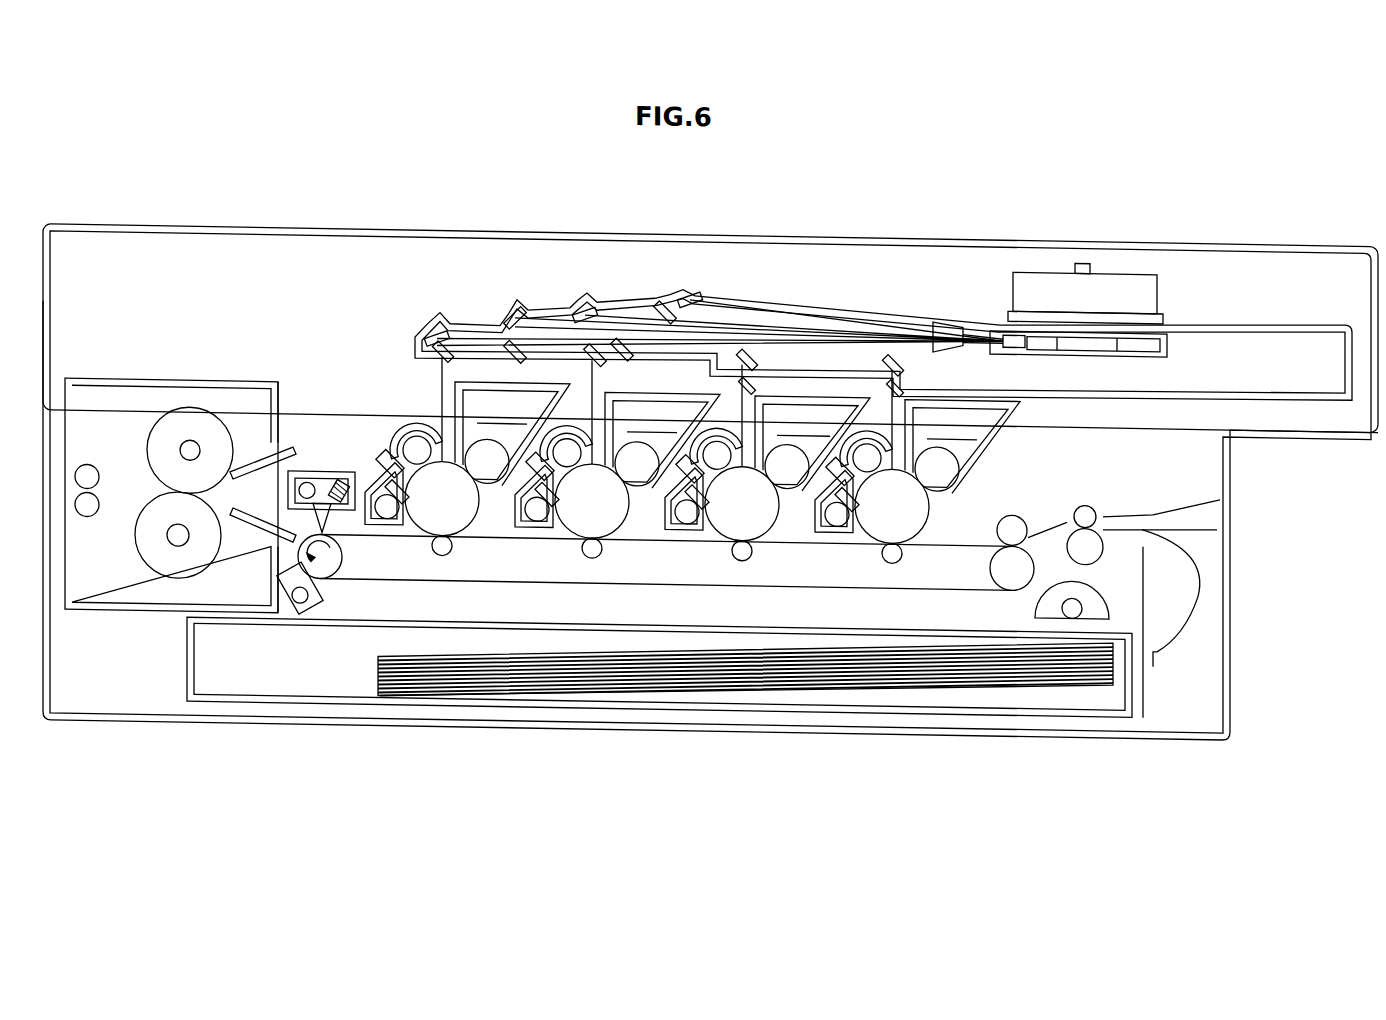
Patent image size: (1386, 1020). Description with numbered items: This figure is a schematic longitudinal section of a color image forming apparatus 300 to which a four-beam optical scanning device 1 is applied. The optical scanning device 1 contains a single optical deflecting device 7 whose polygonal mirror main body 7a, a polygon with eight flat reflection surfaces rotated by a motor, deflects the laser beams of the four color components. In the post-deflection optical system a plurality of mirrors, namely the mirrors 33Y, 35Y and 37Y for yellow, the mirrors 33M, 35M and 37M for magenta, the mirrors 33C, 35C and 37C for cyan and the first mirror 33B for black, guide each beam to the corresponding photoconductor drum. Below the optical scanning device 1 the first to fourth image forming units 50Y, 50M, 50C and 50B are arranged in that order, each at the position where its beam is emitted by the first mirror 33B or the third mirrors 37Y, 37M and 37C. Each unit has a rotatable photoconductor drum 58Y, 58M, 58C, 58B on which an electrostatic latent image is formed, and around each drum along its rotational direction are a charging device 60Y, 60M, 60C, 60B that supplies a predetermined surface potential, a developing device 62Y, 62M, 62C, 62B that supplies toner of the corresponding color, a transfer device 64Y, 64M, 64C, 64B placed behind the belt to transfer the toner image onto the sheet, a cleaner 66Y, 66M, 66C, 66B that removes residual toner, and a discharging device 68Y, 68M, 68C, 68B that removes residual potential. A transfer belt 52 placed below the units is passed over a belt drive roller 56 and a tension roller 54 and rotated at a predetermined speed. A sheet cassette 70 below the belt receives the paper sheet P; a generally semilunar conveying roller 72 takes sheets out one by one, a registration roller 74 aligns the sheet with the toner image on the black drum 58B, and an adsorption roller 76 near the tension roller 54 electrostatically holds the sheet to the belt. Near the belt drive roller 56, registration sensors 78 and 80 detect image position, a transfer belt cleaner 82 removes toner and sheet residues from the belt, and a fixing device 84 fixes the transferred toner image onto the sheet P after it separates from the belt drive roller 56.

The image forming apparatus 300 is at (1146, 223).
The optical scanning device 1 is at (1027, 385).
The optical deflecting device 7 is at (1160, 280).
The polygonal mirror main body 7a is at (1170, 330).
The first mirror 33B is at (425, 323).
The mirror 33C is at (508, 299).
The reflection mirror 33M is at (580, 293).
The mirror 33Y is at (695, 284).
The mirror 35C is at (500, 329).
The reflection mirror 35M is at (640, 334).
The mirror 35Y is at (665, 289).
The third mirror 37C is at (600, 335).
The third mirror 37M is at (758, 342).
The third mirror 37Y is at (905, 352).
The fourth image forming unit 50B is at (512, 434).
The third image forming unit 50C is at (662, 440).
The second image forming unit 50M is at (812, 444).
The first image forming unit 50Y is at (962, 447).
The transfer belt 52 is at (962, 526).
The tension roller 54 is at (1010, 555).
The belt drive roller 56 is at (332, 556).
The photoconductor drum 58B is at (457, 512).
The photoconductor drum 58C is at (598, 510).
The photoconductor drum 58M is at (750, 495).
The photoconductor drum 58Y is at (910, 496).
The charging device 60B is at (416, 433).
The charging device 60C is at (560, 430).
The charging device 60M is at (720, 428).
The charging device 60Y is at (870, 430).
The developing device 62B is at (487, 475).
The developing device 62C is at (632, 469).
The developing device 62M is at (790, 468).
The developing device 62Y is at (958, 455).
The transfer device 64B is at (440, 544).
The transfer device 64C is at (590, 538).
The transfer device 64M is at (748, 547).
The transfer device 64Y is at (893, 545).
The cleaner 66B is at (390, 513).
The cleaner 66C is at (540, 511).
The cleaner 66M is at (690, 510).
The cleaner 66Y is at (840, 506).
The discharging device 68B is at (388, 465).
The discharging device 68C is at (525, 459).
The discharging device 68M is at (668, 468).
The discharging device 68Y is at (850, 460).
The sheet cassette 70 is at (1085, 681).
The paper sheet P is at (977, 673).
The conveying roller 72 is at (1090, 569).
The registration roller 74 is at (1088, 489).
The adsorption roller 76 is at (1014, 502).
The registration sensor 78 is at (328, 464).
The registration sensor 80 is at (318, 464).
The transfer belt cleaner 82 is at (297, 600).
The fixing device 84 is at (120, 586).